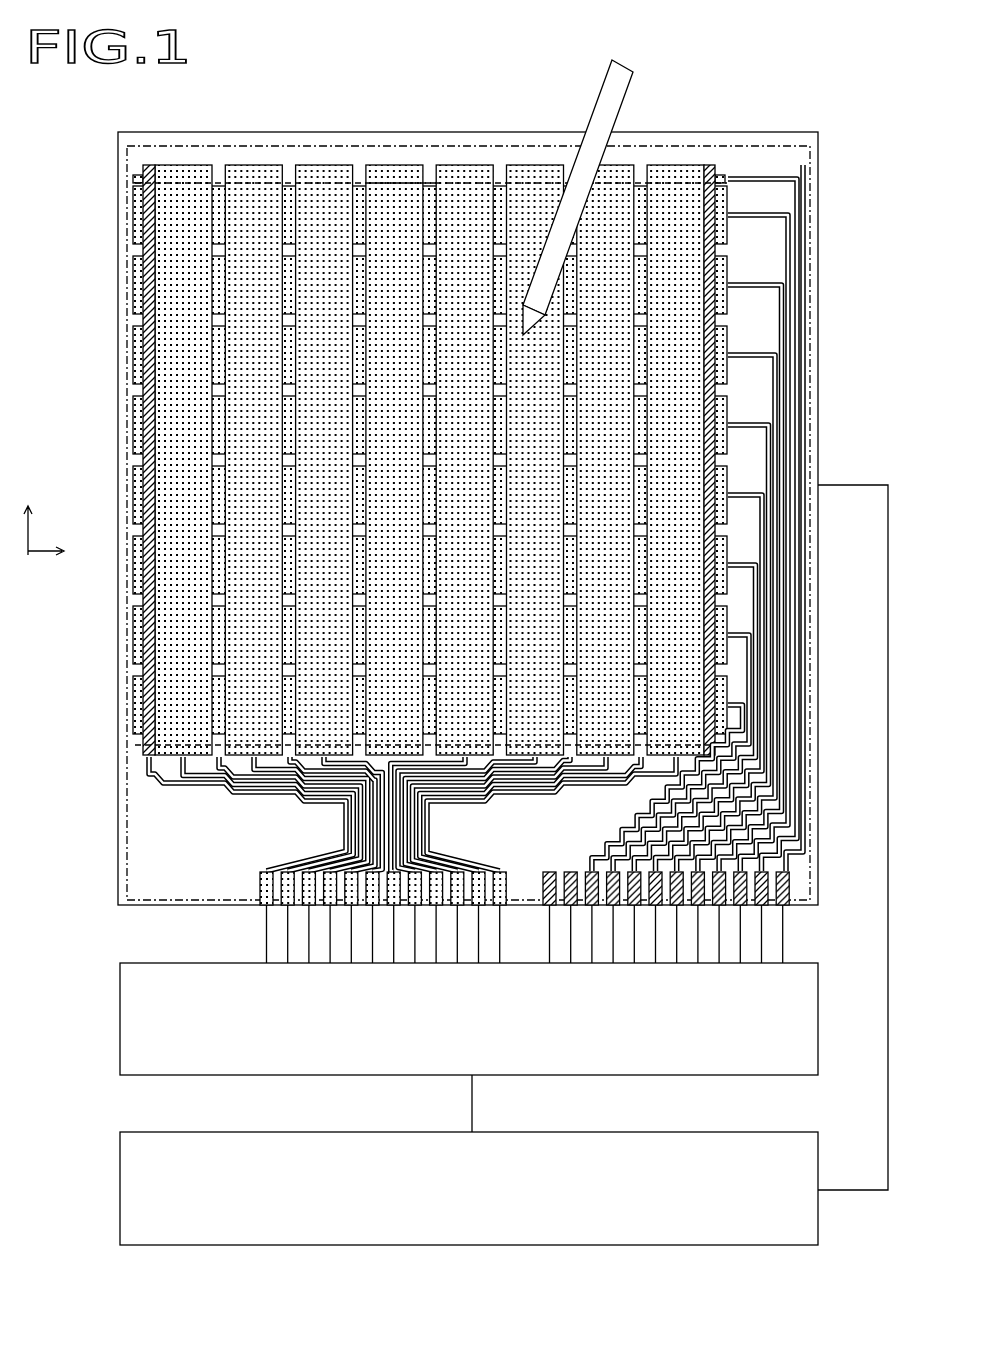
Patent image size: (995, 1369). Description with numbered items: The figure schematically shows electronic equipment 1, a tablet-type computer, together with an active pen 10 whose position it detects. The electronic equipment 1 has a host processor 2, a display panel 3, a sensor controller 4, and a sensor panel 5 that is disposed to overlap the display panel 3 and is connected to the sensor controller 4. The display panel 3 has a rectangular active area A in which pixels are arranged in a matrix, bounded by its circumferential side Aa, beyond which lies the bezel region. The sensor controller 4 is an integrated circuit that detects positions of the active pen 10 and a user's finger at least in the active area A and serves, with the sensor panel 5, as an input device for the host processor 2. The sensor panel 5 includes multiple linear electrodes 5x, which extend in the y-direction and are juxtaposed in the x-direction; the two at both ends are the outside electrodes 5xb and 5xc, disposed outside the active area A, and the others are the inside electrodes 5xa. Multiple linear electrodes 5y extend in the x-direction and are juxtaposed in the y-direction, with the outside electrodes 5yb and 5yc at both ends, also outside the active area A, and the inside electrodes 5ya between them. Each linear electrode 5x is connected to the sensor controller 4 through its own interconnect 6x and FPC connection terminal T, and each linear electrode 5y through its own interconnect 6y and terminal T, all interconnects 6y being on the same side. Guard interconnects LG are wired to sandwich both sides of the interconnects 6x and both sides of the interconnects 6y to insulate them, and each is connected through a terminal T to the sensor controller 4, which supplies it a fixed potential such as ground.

The electronic equipment 1 is at (423, 66).
The host processor 2 is at (120, 1190).
The display panel 3 is at (330, 132).
The sensor controller 4 is at (120, 1020).
The sensor panel 5 is at (455, 166).
The linear electrodes 5x is at (429, 423).
The inside electrodes 5xa is at (536, 172).
The outside electrode 5xb is at (710, 167).
The outside electrode 5xc is at (149, 167).
The linear electrodes 5y is at (370, 464).
The inside electrodes 5ya is at (133, 289).
The outside electrode 5yb is at (133, 745).
The outside electrode 5yc is at (133, 179).
The interconnects 6x is at (350, 826).
The interconnects 6y is at (735, 768).
The active pen 10 is at (622, 70).
The active area A is at (232, 190).
The circumferential side Aa is at (381, 181).
The guard interconnects LG is at (208, 780).
The FPC connection terminals T is at (258, 887).